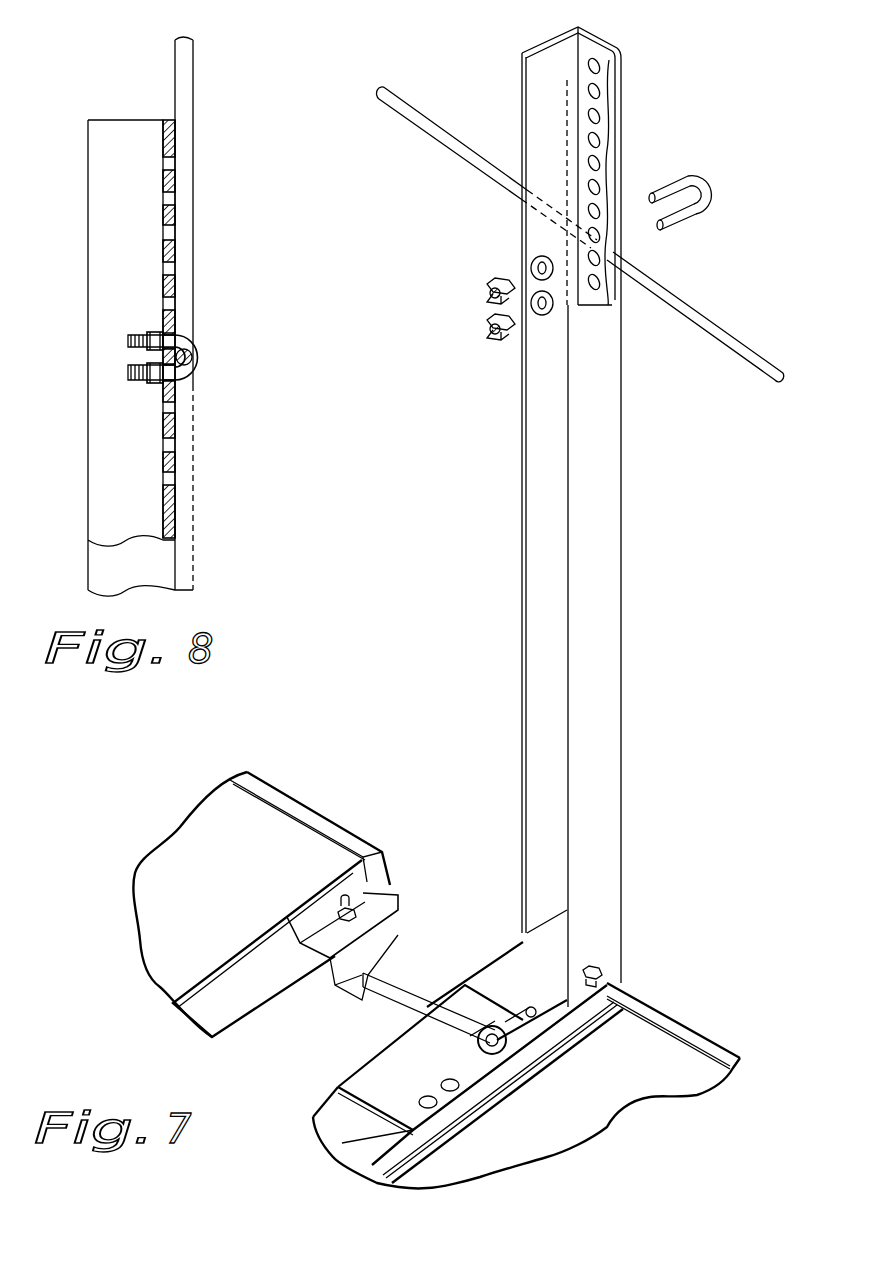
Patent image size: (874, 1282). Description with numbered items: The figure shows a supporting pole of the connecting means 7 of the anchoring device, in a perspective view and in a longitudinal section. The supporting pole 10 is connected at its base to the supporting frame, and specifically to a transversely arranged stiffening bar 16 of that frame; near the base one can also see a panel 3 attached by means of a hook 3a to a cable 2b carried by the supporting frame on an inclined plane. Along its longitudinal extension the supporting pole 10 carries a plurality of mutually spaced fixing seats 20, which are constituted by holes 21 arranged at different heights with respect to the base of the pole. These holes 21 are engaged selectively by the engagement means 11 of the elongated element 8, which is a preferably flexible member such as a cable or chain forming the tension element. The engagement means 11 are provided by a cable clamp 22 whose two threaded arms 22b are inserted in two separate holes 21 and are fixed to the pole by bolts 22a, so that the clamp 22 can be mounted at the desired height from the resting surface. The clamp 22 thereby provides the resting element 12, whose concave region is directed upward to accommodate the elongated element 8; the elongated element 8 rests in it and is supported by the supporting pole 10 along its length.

In FIG. 7, the cable 2b is at (410, 1003).
In FIG. 7, the panel 3 is at (293, 840).
In FIG. 7, the hook 3a is at (387, 925).
In FIG. 7, the connecting means 7 is at (512, 512).
In FIG. 8, the elongated element 8 is at (196, 366).
In FIG. 7, the elongated element 8 is at (738, 357).
In FIG. 8, the supporting pole 10 is at (122, 128).
In FIG. 7, the supporting pole 10 is at (598, 530).
In FIG. 8, the engagement means 11 is at (215, 338).
In FIG. 7, the engagement means 11 is at (712, 150).
In FIG. 8, the resting element 12 is at (212, 360).
In FIG. 7, the resting element 12 is at (705, 210).
In FIG. 7, the stiffening bar 16 is at (332, 1115).
In FIG. 8, the fixing seat 20 is at (160, 164).
In FIG. 7, the fixing seat 20 is at (588, 60).
In FIG. 8, the hole 21 is at (172, 165).
In FIG. 7, the hole 21 is at (597, 70).
In FIG. 8, the cable clamp 22 is at (194, 332).
In FIG. 7, the cable clamp 22 is at (705, 182).
In FIG. 8, the bolt 22a is at (155, 330).
In FIG. 7, the bolt 22a is at (488, 284).
In FIG. 8, the threaded arm 22b is at (128, 338).
In FIG. 7, the threaded arm 22b is at (656, 195).